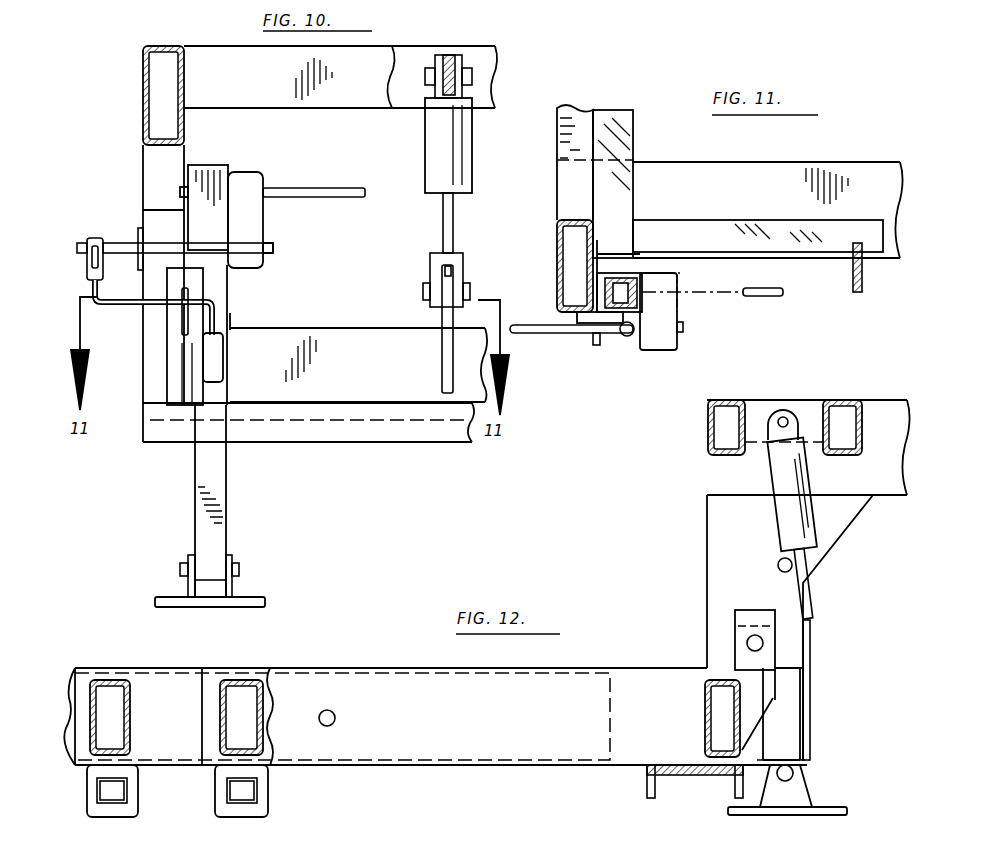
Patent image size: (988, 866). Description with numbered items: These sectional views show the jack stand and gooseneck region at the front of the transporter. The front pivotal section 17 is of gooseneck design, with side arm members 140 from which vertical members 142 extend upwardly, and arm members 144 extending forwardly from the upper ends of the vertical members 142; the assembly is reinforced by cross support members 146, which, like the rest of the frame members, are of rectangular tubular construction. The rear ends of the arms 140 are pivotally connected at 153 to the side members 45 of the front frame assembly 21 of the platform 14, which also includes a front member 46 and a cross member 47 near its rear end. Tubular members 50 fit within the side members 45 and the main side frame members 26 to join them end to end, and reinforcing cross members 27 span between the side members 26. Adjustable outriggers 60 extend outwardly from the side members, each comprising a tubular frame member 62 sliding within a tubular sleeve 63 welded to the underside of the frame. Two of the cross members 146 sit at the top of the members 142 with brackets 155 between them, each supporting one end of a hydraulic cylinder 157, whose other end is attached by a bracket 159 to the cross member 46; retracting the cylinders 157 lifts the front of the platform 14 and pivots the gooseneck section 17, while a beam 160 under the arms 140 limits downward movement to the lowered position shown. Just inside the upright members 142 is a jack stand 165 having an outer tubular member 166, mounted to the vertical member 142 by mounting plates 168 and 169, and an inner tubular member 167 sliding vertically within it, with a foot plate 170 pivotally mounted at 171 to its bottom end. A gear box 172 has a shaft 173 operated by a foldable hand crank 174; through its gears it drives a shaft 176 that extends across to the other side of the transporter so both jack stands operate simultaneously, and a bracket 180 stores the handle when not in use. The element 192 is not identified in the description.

In FIG. 12, the platform 14 is at (86, 665).
In FIG. 12, the front pivotal section 17 is at (702, 520).
In FIG. 12, the front frame assembly 21 is at (372, 665).
In FIG. 12, the main side frame members 26 is at (140, 668).
In FIG. 12, the reinforcing cross members 27 is at (130, 706).
In FIG. 11, the side members 45 is at (630, 111).
In FIG. 12, the side members 45 is at (625, 668).
In FIG. 10, the front member 46 is at (340, 328).
In FIG. 11, the front member 46 is at (833, 260).
In FIG. 12, the front member 46 is at (703, 711).
In FIG. 12, the cross member 47 is at (263, 715).
In FIG. 12, the tubular members 50 is at (617, 765).
In FIG. 12, the adjustable outriggers 60 is at (200, 865).
In FIG. 12, the tubular frame member 62 is at (224, 800).
In FIG. 12, the tubular sleeve 63 is at (213, 786).
In FIG. 11, the side arm members 140 is at (586, 102).
In FIG. 12, the side arm members 140 is at (272, 690).
In FIG. 10, the vertical members 142 is at (143, 161).
In FIG. 11, the vertical members 142 is at (556, 248).
In FIG. 12, the vertical members 142 is at (707, 573).
In FIG. 10, the arm members 144 is at (143, 98).
In FIG. 12, the arm members 144 is at (879, 496).
In FIG. 10, the cross support members 146 is at (319, 106).
In FIG. 12, the cross support members 146 is at (708, 427).
In FIG. 12, the pivotal connection 153 is at (335, 719).
In FIG. 10, the brackets 155 is at (448, 55).
In FIG. 12, the brackets 155 is at (787, 401).
In FIG. 10, the hydraulic cylinder 157 is at (472, 170).
In FIG. 12, the hydraulic cylinder 157 is at (752, 478).
In FIG. 10, the brackets 159 is at (440, 320).
In FIG. 11, the brackets 159 is at (857, 293).
In FIG. 12, the brackets 159 is at (758, 680).
In FIG. 10, the beam 160 is at (378, 440).
In FIG. 11, the beam 160 is at (768, 164).
In FIG. 12, the beam 160 is at (677, 778).
In FIG. 10, the jack stand 165 is at (232, 313).
In FIG. 12, the jack stand 165 is at (812, 740).
In FIG. 10, the outer tubular member 166 is at (226, 286).
In FIG. 11, the outer tubular member 166 is at (666, 283).
In FIG. 12, the outer tubular member 166 is at (800, 707).
In FIG. 10, the inner tubular member 167 is at (220, 474).
In FIG. 11, the inner tubular member 167 is at (643, 302).
In FIG. 12, the inner tubular member 167 is at (791, 762).
In FIG. 11, the mounting plate 168 is at (626, 260).
In FIG. 12, the mounting plate 168 is at (760, 752).
In FIG. 10, the mounting plate 169 is at (170, 382).
In FIG. 11, the mounting plate 169 is at (581, 326).
In FIG. 12, the mounting plate 169 is at (812, 642).
In FIG. 10, the foot plate 170 is at (258, 597).
In FIG. 12, the foot plate 170 is at (782, 817).
In FIG. 10, the pivotal mounting 171 is at (236, 563).
In FIG. 12, the pivotal mounting 171 is at (796, 773).
In FIG. 10, the gear box 172 is at (266, 164).
In FIG. 11, the gear box 172 is at (662, 352).
In FIG. 10, the shaft 173 is at (130, 242).
In FIG. 10, the foldable hand crank 174 is at (110, 304).
In FIG. 11, the foldable hand crank 174 is at (549, 335).
In FIG. 10, the shaft 176 is at (345, 176).
In FIG. 11, the shaft 176 is at (745, 300).
In FIG. 12, the shaft 176 is at (792, 574).
In FIG. 10, the bracket 180 is at (182, 327).
In FIG. 11, the bracket 180 is at (597, 346).
In FIG. 12, the bracket 192 is at (235, 856).